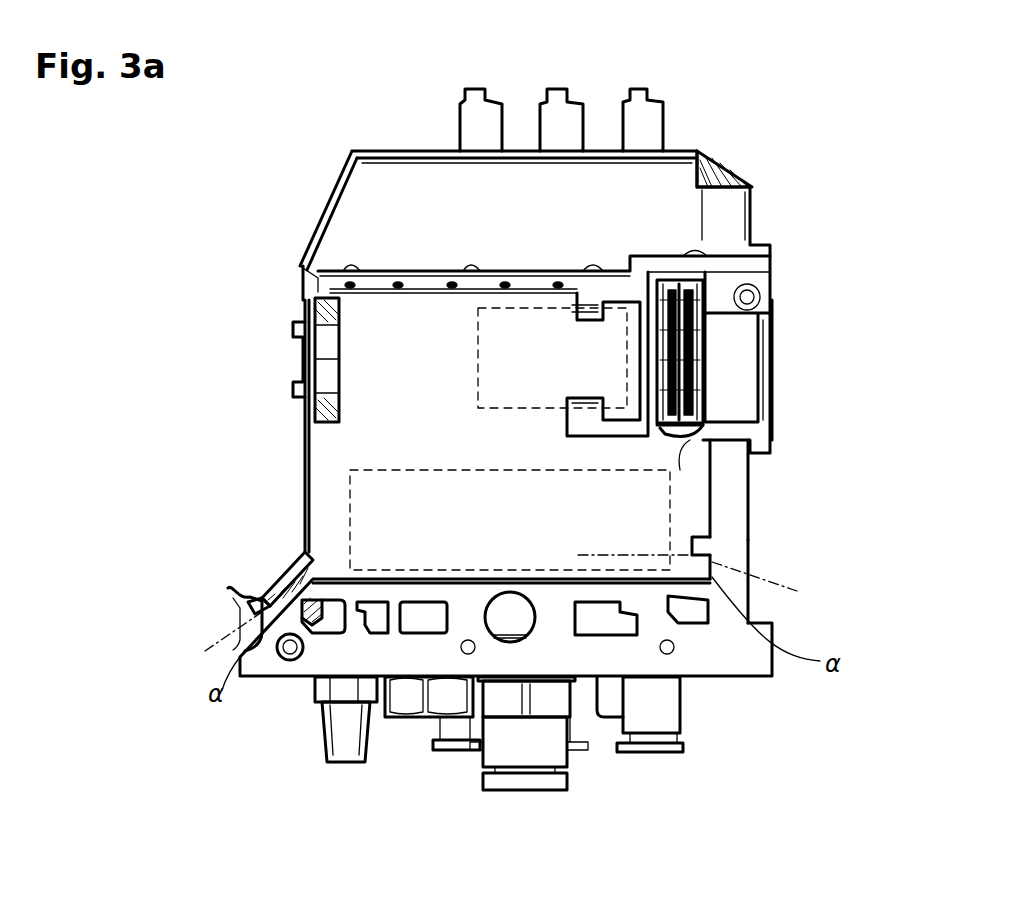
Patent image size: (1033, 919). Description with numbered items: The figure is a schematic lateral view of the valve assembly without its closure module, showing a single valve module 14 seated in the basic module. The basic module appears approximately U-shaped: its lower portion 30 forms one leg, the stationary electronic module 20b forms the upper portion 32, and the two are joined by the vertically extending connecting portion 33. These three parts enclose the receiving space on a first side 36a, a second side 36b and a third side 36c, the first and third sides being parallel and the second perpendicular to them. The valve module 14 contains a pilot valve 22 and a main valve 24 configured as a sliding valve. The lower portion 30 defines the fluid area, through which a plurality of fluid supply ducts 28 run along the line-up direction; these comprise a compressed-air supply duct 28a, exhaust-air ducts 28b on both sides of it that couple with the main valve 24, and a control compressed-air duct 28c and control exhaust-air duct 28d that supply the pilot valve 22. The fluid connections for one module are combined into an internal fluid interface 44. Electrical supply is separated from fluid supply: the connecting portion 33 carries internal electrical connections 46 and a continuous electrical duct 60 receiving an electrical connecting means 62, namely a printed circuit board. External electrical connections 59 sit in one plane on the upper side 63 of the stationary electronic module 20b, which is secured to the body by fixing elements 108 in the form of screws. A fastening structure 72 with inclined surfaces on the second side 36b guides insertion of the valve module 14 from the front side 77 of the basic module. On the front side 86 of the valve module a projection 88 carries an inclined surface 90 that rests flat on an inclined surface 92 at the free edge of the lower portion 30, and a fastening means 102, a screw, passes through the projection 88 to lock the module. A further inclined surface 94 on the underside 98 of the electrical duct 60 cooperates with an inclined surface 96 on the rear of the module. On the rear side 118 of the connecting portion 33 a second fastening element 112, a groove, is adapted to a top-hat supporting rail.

The valve module 14 is at (208, 240).
The stationary electronic module 20b is at (655, 185).
The pilot valve 22 is at (558, 363).
The main valve 24 is at (446, 525).
The fluid supply duct 28 is at (609, 655).
The compressed-air supply duct 28a is at (510, 621).
The exhaust-air duct 28b is at (435, 633).
The control compressed-air duct 28c is at (383, 634).
The control exhaust-air duct 28d is at (326, 629).
The lower portion 30 is at (345, 692).
The upper portion 32 is at (386, 196).
The connecting portion 33 is at (735, 522).
The first side 36a is at (518, 568).
The second side 36b is at (682, 496).
The third side 36c is at (430, 299).
The internal fluid interface 44 is at (467, 656).
The internal electrical connection 46 is at (700, 328).
The external electrical connection 59 is at (640, 100).
The electrical duct 60 is at (735, 340).
The electrical connecting means 62 is at (698, 288).
The upper side 63 is at (522, 150).
The fastening structure 72 is at (722, 548).
The front side 77 is at (246, 348).
The front side 86 is at (296, 421).
The projection 88 is at (235, 596).
The inclined surface 90 is at (262, 600).
The inclined surface 92 is at (302, 605).
The inclined surface 94 is at (702, 416).
The inclined surface 96 is at (672, 433).
The underside 98 is at (681, 458).
The fastening means 102 is at (262, 575).
The fixing element 108 is at (735, 167).
The second fastening element 112 is at (752, 598).
The rear side 118 is at (790, 361).